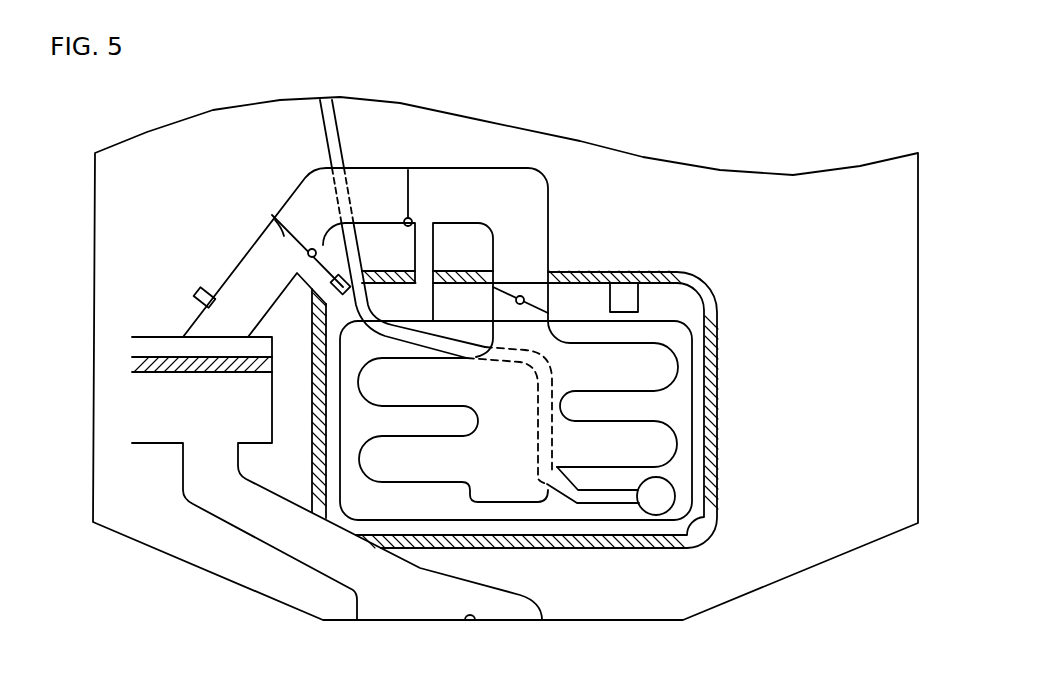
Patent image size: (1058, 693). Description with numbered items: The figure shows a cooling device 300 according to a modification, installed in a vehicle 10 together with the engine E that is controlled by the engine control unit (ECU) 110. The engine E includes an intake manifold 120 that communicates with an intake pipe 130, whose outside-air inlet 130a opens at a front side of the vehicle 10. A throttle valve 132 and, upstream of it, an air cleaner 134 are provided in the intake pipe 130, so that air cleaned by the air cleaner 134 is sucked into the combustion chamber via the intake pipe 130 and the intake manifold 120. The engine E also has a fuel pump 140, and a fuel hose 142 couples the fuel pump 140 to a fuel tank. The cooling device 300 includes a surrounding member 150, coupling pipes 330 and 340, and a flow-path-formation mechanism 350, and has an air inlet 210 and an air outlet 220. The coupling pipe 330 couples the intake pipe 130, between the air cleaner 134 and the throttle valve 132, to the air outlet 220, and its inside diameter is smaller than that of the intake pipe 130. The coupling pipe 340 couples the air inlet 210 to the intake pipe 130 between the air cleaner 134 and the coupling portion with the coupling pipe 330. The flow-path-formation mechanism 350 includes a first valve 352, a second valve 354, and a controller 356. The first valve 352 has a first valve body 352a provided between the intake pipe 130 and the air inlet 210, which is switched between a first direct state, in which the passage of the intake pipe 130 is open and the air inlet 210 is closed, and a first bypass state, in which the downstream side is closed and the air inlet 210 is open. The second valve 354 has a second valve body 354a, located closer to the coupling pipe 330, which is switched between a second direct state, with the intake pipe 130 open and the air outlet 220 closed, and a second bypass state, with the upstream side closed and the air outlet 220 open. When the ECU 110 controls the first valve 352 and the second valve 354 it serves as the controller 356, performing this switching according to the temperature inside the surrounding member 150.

The vehicle 10 is at (880, 540).
The engine control unit (ECU) 110 is at (703, 241).
The intake manifold 120 is at (678, 437).
The intake pipe 130 is at (337, 509).
The outside-air inlet 130a is at (470, 626).
The throttle valve 132 is at (519, 282).
The air cleaner 134 is at (150, 358).
The fuel pump 140 is at (676, 493).
The fuel hose 142 is at (362, 208).
The surrounding member 150 is at (718, 358).
The engine E is at (692, 401).
The air inlet 210 is at (337, 292).
The air outlet 220 is at (433, 283).
The cooling device 300 is at (293, 164).
The coupling pipe 330 is at (412, 254).
The coupling pipe 340 is at (312, 290).
The flow-path-formation mechanism 350 is at (487, 183).
The first valve 352 is at (233, 237).
The first valve body 352a is at (272, 215).
The second valve 354 is at (473, 142).
The second valve body 354a is at (408, 170).
The controller 356 is at (624, 272).